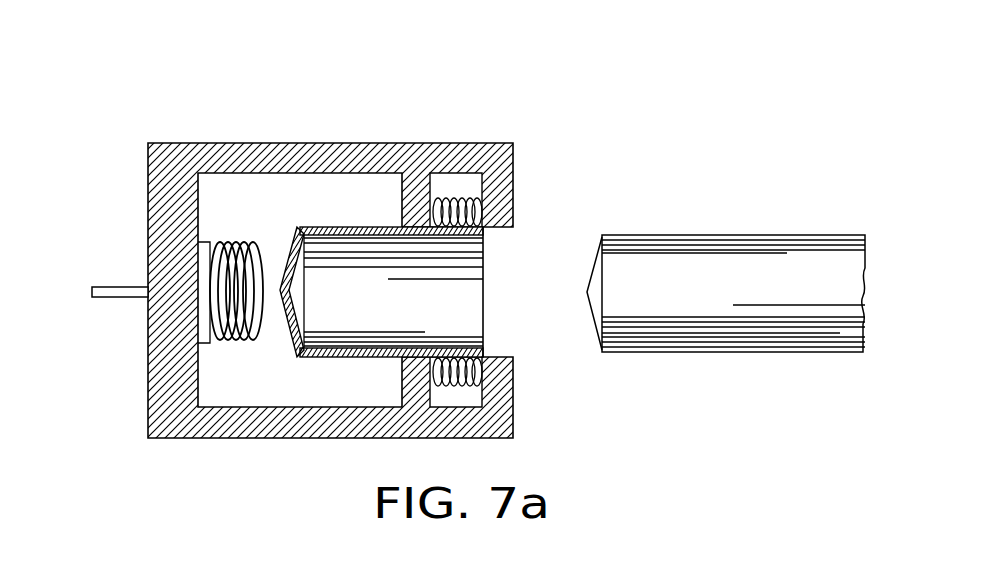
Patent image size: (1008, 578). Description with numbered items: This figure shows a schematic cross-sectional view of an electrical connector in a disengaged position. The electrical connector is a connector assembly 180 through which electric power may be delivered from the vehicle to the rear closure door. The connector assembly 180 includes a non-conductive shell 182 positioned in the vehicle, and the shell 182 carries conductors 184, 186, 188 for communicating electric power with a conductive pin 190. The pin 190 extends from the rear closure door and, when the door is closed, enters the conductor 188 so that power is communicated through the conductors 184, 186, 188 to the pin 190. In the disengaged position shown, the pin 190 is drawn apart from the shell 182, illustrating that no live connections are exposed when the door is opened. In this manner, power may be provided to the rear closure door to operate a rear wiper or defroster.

The connector assembly 180 is at (278, 232).
The non-conductive shell 182 is at (228, 145).
The conductor 184 is at (125, 298).
The conductor 186 is at (230, 242).
The conductor 188 is at (340, 225).
The conductive pin 190 is at (693, 352).